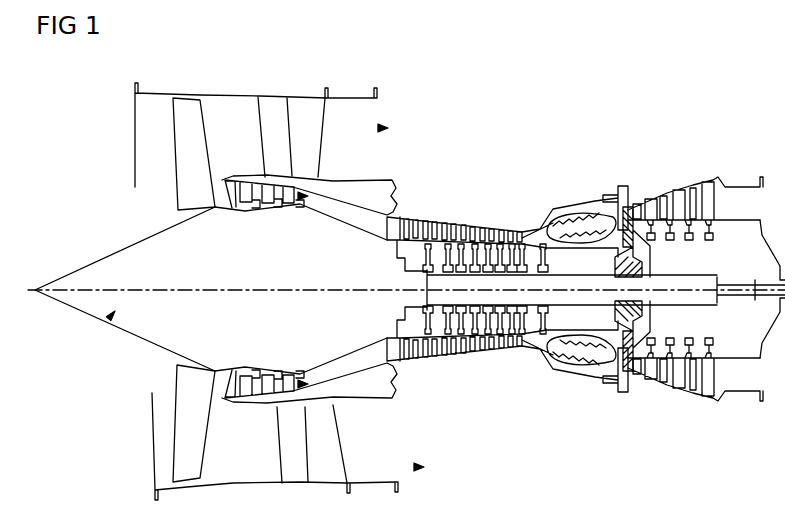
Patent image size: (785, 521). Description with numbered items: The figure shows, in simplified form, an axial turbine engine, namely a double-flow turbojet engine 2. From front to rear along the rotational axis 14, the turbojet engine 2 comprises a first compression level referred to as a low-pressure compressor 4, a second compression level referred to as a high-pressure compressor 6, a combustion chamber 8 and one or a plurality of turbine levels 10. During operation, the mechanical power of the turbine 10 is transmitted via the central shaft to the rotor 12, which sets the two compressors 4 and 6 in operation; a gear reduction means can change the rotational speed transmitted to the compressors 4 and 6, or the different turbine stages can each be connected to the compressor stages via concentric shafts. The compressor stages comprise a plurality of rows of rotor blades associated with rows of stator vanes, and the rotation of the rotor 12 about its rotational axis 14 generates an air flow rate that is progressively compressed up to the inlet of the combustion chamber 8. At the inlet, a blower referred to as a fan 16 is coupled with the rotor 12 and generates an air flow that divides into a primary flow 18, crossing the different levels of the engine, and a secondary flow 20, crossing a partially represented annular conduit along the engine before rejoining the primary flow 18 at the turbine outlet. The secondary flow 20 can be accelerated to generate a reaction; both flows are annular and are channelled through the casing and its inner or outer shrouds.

The turbojet engine 2 is at (567, 118).
The low-pressure compressor 4 is at (245, 206).
The high-pressure compressor 6 is at (433, 230).
The combustion chamber 8 is at (563, 232).
The turbine 10 is at (692, 200).
The rotor 12 is at (110, 316).
The rotational axis 14 is at (270, 291).
The fan 16 is at (190, 150).
The primary flow 18 is at (300, 384).
The secondary flow 20 is at (416, 467).